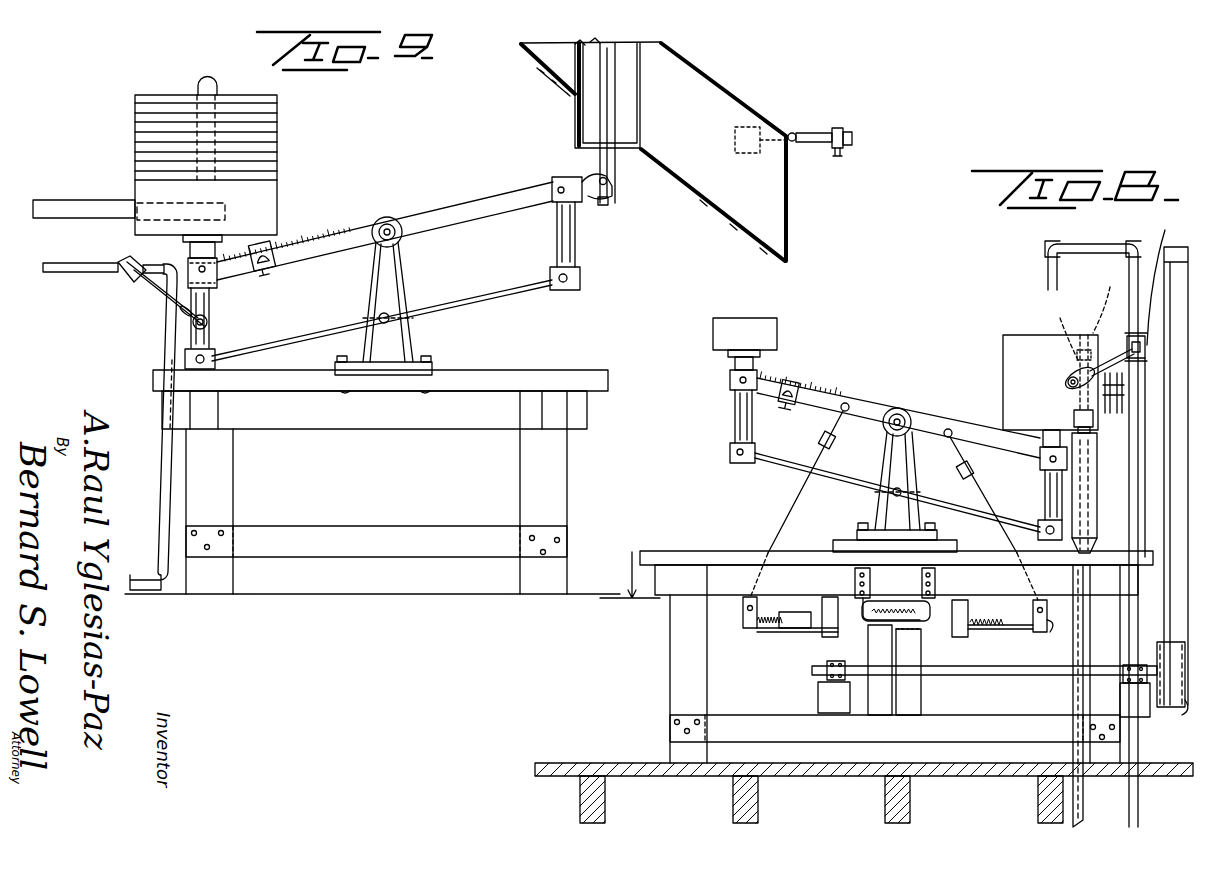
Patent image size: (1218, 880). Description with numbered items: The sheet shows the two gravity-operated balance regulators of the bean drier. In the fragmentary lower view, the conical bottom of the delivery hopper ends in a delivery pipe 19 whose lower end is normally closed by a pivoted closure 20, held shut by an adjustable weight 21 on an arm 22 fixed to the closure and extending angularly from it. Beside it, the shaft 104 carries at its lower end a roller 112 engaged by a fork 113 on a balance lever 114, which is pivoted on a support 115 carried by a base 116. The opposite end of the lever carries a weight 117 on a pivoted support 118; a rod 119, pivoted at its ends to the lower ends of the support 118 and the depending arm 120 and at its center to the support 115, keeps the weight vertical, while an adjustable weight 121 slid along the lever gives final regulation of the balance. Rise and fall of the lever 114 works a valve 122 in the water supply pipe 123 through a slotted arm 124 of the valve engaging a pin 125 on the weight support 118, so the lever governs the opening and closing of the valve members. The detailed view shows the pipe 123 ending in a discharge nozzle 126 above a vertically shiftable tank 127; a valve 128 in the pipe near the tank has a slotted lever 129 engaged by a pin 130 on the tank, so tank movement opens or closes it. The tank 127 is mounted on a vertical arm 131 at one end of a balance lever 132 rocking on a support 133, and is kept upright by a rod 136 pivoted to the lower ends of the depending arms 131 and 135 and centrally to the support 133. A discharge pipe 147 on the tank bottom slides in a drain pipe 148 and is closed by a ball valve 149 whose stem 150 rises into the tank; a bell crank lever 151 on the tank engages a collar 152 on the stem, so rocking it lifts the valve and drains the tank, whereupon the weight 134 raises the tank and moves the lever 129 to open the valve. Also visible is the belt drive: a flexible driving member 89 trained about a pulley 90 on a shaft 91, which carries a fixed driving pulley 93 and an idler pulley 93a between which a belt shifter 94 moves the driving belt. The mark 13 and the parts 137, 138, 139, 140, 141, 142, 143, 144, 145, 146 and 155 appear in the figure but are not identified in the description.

In FIG. 8, the table top level 13 is at (1161, 560).
In FIG. 9, the delivery pipe 19 is at (745, 112).
In FIG. 9, the pivoted closure 20 is at (793, 200).
In FIG. 9, the adjustable weight 21 is at (838, 128).
In FIG. 9, the arm 22 is at (852, 138).
In FIG. 8, the flexible driving member 89 is at (1168, 415).
In FIG. 8, the pulley 90 is at (1176, 715).
In FIG. 8, the shaft 91 is at (985, 667).
In FIG. 8, the driving pulley 93 is at (868, 655).
In FIG. 8, the idler pulley 93a is at (925, 700).
In FIG. 8, the belt shifter 94 is at (896, 602).
In FIG. 9, the shaft 104 is at (613, 130).
In FIG. 9, the roller 112 is at (612, 185).
In FIG. 9, the fork 113 is at (580, 178).
In FIG. 9, the balance lever 114 is at (436, 212).
In FIG. 9, the support 115 is at (405, 272).
In FIG. 9, the base 116 is at (508, 372).
In FIG. 9, the weight 117 is at (277, 163).
In FIG. 9, the pivoted support 118 is at (218, 302).
In FIG. 9, the rod 119 is at (470, 308).
In FIG. 9, the depending arm 120 is at (580, 240).
In FIG. 9, the adjustable weight 121 is at (272, 246).
In FIG. 9, the valve 122 is at (122, 283).
In FIG. 9, the water supply pipe 123 is at (60, 280).
In FIG. 8, the water supply pipe 123 is at (1130, 495).
In FIG. 9, the slotted arm 124 is at (152, 296).
In FIG. 9, the pin 125 is at (225, 320).
In FIG. 8, the discharge nozzle 126 is at (1047, 275).
In FIG. 8, the tank 127 is at (1030, 322).
In FIG. 8, the valve 128 is at (1166, 380).
In FIG. 8, the slotted lever 129 is at (1127, 345).
In FIG. 8, the pin 130 is at (1065, 376).
In FIG. 8, the arm 131 is at (1045, 505).
In FIG. 8, the balance lever 132 is at (918, 412).
In FIG. 8, the support 133 is at (885, 468).
In FIG. 8, the weight 134 is at (778, 334).
In FIG. 8, the depending arm 135 is at (730, 425).
In FIG. 8, the rod 136 is at (775, 482).
In FIG. 8, the rider weight 137 is at (795, 384).
In FIG. 8, the table 138 is at (686, 550).
In FIG. 8, the guide plate 139 is at (853, 585).
In FIG. 8, the guide plate 140 is at (935, 586).
In FIG. 8, the slide block 141 is at (787, 631).
In FIG. 8, the slide block 142 is at (968, 610).
In FIG. 8, the tie rod 143 is at (800, 506).
In FIG. 8, the bracket 144 is at (745, 608).
In FIG. 8, the spring 145 is at (1010, 624).
In FIG. 8, the bracket 146 is at (1043, 633).
In FIG. 8, the discharge pipe 147 is at (1097, 435).
In FIG. 8, the drain pipe 148 is at (1088, 552).
In FIG. 8, the ball valve 149 is at (1074, 420).
In FIG. 8, the stem 150 is at (1106, 300).
In FIG. 8, the bell crank lever 151 is at (1122, 388).
In FIG. 8, the collar 152 is at (1068, 327).
In FIG. 8, the valve pipe 155 is at (1097, 415).